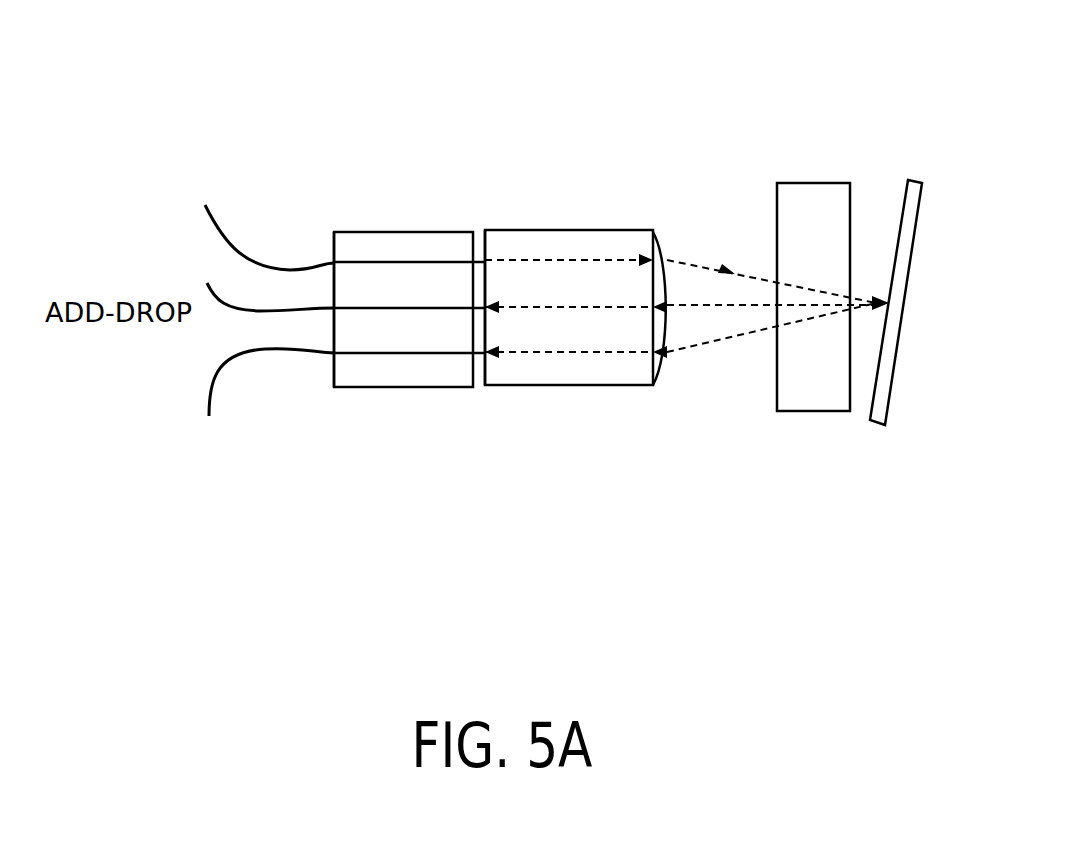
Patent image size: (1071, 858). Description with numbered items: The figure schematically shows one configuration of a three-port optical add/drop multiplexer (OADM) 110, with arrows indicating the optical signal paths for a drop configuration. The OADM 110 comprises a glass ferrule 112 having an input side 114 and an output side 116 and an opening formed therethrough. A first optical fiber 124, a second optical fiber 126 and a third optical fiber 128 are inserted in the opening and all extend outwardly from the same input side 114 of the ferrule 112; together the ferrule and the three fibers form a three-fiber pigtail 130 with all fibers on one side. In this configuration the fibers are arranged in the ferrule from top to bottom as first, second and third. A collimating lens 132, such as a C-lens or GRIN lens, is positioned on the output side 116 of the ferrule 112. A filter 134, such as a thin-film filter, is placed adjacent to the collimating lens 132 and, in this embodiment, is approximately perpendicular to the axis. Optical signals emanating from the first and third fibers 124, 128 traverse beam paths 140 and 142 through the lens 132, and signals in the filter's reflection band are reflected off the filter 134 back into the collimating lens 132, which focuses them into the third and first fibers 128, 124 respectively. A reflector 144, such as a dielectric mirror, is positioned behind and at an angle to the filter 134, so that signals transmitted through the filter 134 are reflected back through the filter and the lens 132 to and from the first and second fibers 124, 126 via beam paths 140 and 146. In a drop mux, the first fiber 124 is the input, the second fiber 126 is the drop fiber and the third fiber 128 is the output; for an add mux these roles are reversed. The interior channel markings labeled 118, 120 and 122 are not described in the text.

The three-port optical add/drop multiplexer 110 is at (378, 555).
The glass ferrule 112 is at (369, 369).
The input side 114 is at (330, 242).
The output side 116 is at (477, 378).
The first fiber channel 118 is at (369, 258).
The second fiber channel 120 is at (398, 307).
The third fiber channel 122 is at (407, 353).
The first optical fiber 124 is at (240, 255).
The second optical fiber 126 is at (223, 307).
The third optical fiber 128 is at (252, 357).
The 3-fiber pigtail 130 is at (470, 93).
The collimating lens 132 is at (615, 373).
The filter 134 is at (812, 210).
The beam path 140 is at (522, 260).
The beam path 142 is at (552, 357).
The reflector 144 is at (888, 398).
The beam path 146 is at (582, 306).